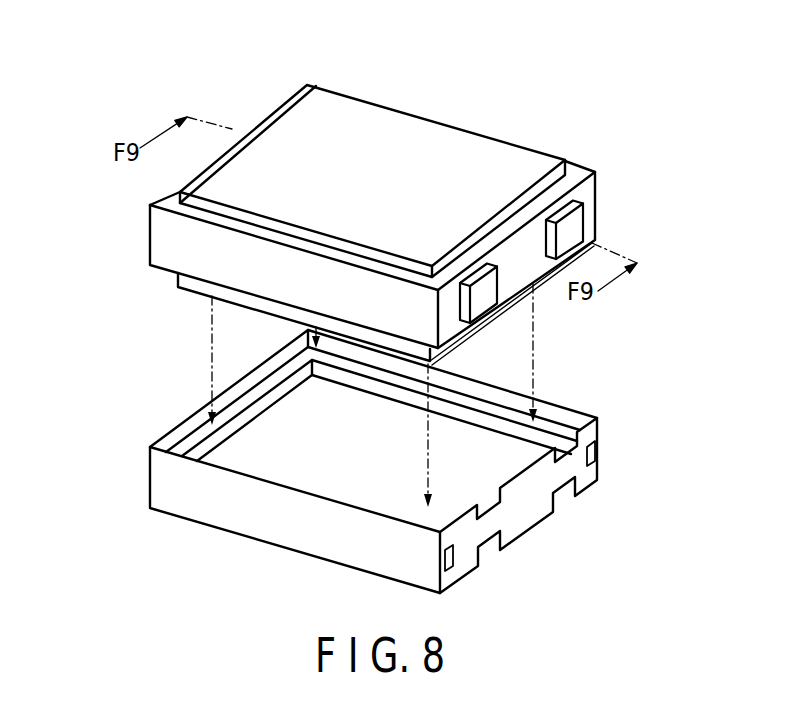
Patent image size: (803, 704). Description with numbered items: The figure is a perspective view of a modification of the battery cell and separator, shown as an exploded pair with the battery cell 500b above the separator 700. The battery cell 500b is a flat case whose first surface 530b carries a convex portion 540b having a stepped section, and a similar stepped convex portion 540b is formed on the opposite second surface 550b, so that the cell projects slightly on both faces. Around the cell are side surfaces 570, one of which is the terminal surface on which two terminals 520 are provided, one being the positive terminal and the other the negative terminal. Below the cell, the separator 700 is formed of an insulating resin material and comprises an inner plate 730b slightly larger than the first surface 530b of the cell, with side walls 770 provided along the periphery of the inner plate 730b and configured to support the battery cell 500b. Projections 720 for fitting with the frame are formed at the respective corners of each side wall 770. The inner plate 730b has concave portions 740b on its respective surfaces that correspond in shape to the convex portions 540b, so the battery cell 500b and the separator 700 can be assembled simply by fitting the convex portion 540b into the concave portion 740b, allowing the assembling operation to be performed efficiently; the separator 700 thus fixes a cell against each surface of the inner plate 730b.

The battery cell 500b is at (274, 64).
The housing body 550b is at (149, 228).
The first surface 530b is at (576, 178).
The convex portion 540b is at (486, 160).
The terminal 520 is at (580, 226).
The side surface 570 is at (535, 265).
The separator 700 is at (125, 514).
The side wall 770 is at (150, 478).
The projection 720 is at (596, 451).
The inner plate 730b is at (270, 390).
The concave portion 740b is at (530, 453).